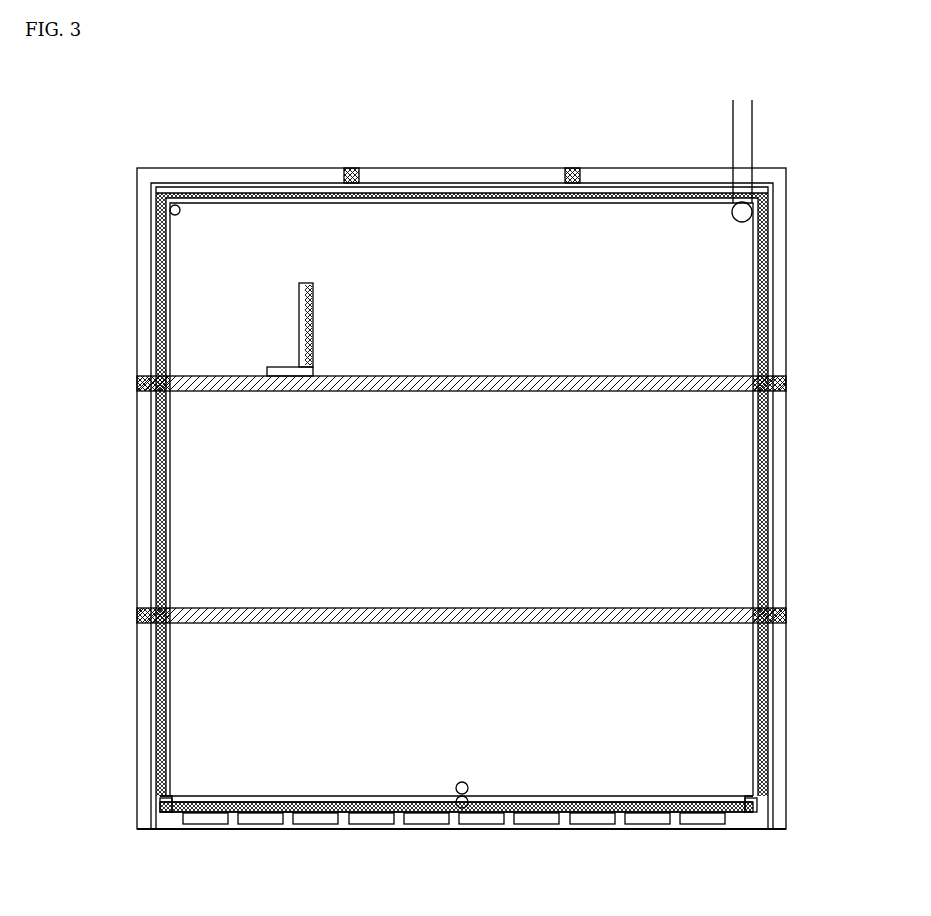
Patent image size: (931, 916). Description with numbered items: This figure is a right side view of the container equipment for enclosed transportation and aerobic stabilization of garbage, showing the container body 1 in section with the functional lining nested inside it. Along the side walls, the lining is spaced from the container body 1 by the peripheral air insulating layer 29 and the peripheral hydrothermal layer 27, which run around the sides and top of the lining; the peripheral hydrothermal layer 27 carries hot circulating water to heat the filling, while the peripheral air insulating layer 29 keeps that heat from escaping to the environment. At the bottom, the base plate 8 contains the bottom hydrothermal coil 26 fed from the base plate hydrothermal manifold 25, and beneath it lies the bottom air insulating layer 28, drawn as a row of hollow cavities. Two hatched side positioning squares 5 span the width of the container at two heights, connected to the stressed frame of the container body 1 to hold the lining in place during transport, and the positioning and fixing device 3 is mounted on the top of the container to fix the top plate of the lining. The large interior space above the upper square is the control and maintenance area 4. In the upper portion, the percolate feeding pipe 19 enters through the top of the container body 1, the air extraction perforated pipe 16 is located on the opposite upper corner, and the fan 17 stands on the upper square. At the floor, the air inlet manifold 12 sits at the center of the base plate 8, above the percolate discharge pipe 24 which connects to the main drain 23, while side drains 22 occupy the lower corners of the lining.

The container body 1 is at (136, 250).
The positioning and fixing device 3 is at (573, 170).
The control and maintenance area 4 is at (684, 338).
The side positioning square 5 is at (137, 612).
The base plate 8 is at (170, 826).
The air inlet manifold 12 is at (468, 784).
The air extraction perforated pipe 16 is at (180, 216).
The fan 17 is at (308, 306).
The percolate feeding pipe 19 is at (746, 130).
The side drain 22 is at (180, 800).
The main drain 23 is at (250, 800).
The percolate discharge pipe 24 is at (460, 807).
The base plate hydrothermal manifold 25 is at (165, 802).
The bottom hydrothermal coil 26 is at (346, 812).
The peripheral hydrothermal layer 27 is at (405, 203).
The bottom air insulating layer 28 is at (210, 822).
The peripheral air insulating layer 29 is at (400, 196).